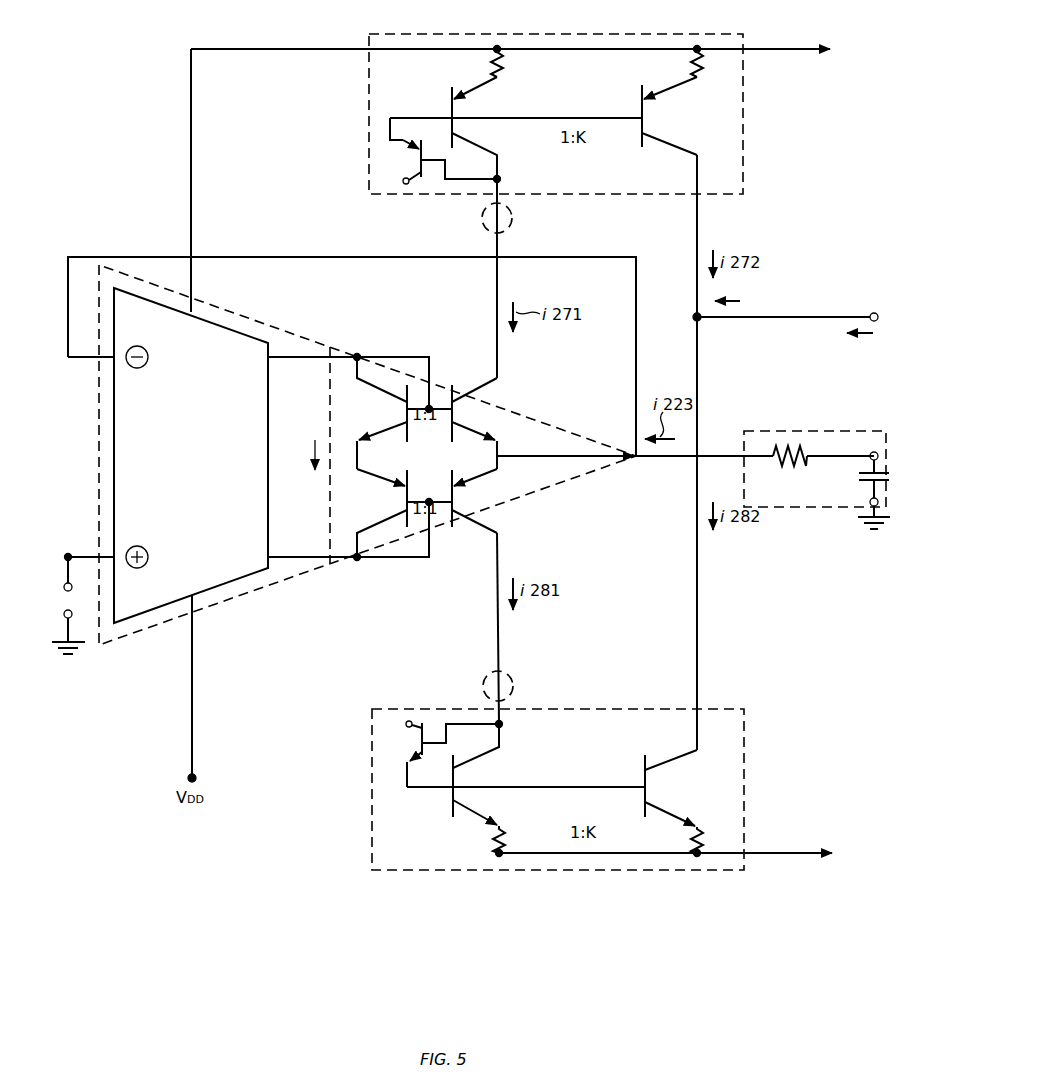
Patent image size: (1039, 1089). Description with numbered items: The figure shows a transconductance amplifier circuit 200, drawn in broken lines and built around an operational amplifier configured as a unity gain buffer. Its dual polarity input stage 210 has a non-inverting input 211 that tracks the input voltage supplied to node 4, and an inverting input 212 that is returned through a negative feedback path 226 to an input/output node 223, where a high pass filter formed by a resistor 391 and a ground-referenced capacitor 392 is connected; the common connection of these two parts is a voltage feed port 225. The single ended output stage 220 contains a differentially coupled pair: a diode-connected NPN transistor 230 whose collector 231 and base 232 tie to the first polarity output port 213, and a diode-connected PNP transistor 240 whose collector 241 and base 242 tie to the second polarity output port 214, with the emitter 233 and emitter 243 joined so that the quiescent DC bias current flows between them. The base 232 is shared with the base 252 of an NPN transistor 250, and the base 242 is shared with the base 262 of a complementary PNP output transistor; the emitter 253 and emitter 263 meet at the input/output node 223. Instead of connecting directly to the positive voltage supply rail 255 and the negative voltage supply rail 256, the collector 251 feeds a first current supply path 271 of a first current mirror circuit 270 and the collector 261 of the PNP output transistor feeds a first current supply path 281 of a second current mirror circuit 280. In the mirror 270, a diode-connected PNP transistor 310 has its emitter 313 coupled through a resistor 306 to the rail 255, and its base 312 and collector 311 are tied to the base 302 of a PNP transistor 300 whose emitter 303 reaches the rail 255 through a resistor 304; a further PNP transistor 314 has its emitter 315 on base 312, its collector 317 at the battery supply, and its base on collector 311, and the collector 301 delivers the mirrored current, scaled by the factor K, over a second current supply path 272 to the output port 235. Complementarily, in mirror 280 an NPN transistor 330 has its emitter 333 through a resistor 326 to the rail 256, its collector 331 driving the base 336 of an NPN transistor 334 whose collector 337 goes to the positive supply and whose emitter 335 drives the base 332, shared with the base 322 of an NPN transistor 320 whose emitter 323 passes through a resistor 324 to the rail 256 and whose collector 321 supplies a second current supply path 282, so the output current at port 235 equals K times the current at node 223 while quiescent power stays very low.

The node 4 is at (65, 558).
The transconductance amplifier circuit 200 is at (237, 312).
The input stage 210 is at (220, 590).
The non-inverting input 211 is at (97, 555).
The inverting input 212 is at (90, 358).
The first polarity output port 213 is at (272, 355).
The second polarity output port 214 is at (270, 555).
The output stage 220 is at (523, 418).
The input/output node 223 is at (636, 460).
The voltage feed port 225 is at (873, 453).
The negative feedback path 226 is at (377, 258).
The diode-connected NPN transistor 230 is at (395, 400).
The collector of transistor 230 231 is at (383, 380).
The base of transistor 230 232 is at (412, 412).
The emitter of transistor 230 233 is at (392, 420).
The output port 235 is at (873, 314).
The diode-connected PNP transistor 240 is at (397, 510).
The collector of transistor 240 241 is at (380, 547).
The base of transistor 240 242 is at (417, 507).
The emitter of transistor 240 243 is at (378, 478).
The NPN transistor 250 is at (472, 402).
The collector of transistor 250 251 is at (473, 382).
The base of transistor 250 252 is at (447, 392).
The emitter of transistor 250 253 is at (470, 433).
The Vcc voltage supply rail 255 is at (782, 48).
The VBAT/Vee voltage supply rail 256 is at (777, 855).
The collector of transistor 260 261 is at (488, 520).
The base of transistor 260 262 is at (448, 507).
The emitter of transistor 260 263 is at (467, 480).
The first current mirror circuit 270 is at (744, 152).
The first current supply path 271 is at (499, 287).
The second current supply path 272 is at (698, 237).
The second current mirror circuit 280 is at (427, 708).
The first current supply path 281 is at (500, 640).
The second current supply path 282 is at (699, 605).
The first PNP transistor 300 is at (647, 120).
The collector of transistor 300 301 is at (672, 147).
The base of transistor 300 302 is at (617, 117).
The emitter of transistor 300 303 is at (678, 88).
The resistor 304 is at (690, 65).
The resistor 306 is at (500, 66).
The diode-connected current mirror PNP transistor 310 is at (480, 105).
The collector of transistor 310 311 is at (483, 143).
The base of transistor 310 312 is at (450, 117).
The emitter of transistor 310 313 is at (478, 82).
The further PNP transistor 314 is at (417, 160).
The emitter of transistor 314 315 is at (413, 137).
The collector of transistor 314 317 is at (417, 178).
The first NPN transistor 320 is at (672, 790).
The collector of transistor 320 321 is at (680, 753).
The base of transistor 320 322 is at (628, 783).
The emitter of transistor 320 323 is at (670, 817).
The resistor 324 is at (703, 835).
The resistor 326 is at (505, 832).
The current mirror NPN transistor 330 is at (478, 800).
The collector of transistor 330 331 is at (483, 758).
The base of transistor 330 332 is at (432, 789).
The emitter of transistor 330 333 is at (473, 814).
The NPN transistor 334 is at (417, 747).
The emitter of transistor 334 335 is at (410, 762).
The base of transistor 334 336 is at (447, 743).
The collector of transistor 334 337 is at (417, 732).
The resistor 391 is at (780, 467).
The capacitor 392 is at (853, 480).